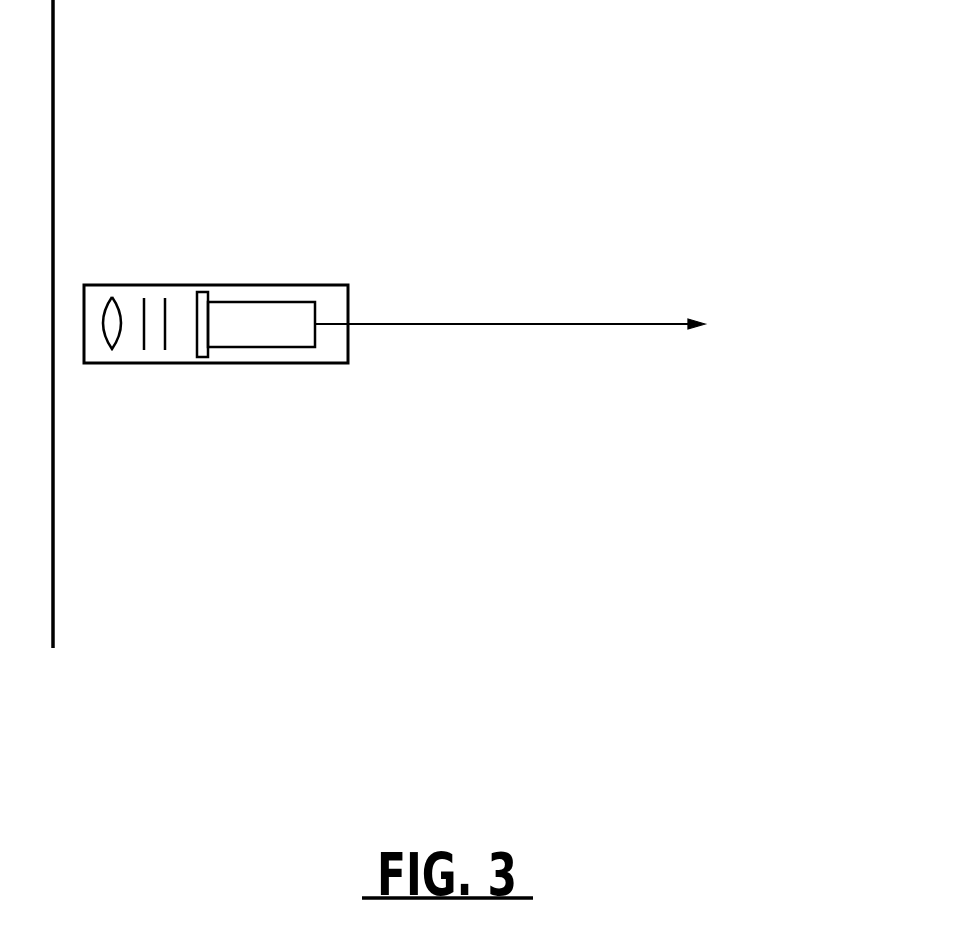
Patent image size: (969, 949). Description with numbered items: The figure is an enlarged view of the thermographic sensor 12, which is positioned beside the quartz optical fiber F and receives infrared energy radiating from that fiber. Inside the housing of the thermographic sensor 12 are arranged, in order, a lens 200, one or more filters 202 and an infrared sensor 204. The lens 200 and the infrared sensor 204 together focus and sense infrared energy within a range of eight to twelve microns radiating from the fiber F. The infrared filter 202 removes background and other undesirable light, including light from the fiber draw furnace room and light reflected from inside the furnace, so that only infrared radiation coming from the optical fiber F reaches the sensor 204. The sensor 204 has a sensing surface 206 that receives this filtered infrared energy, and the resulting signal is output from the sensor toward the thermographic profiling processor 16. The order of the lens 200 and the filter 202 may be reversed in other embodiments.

The optical fiber F is at (53, 97).
The thermographic sensor 12 is at (380, 219).
The lens 200 is at (97, 338).
The filter 202 is at (143, 338).
The sensor 204 is at (280, 331).
The sensing surface 206 is at (201, 292).
The thermographic profiling processor 16 is at (596, 327).